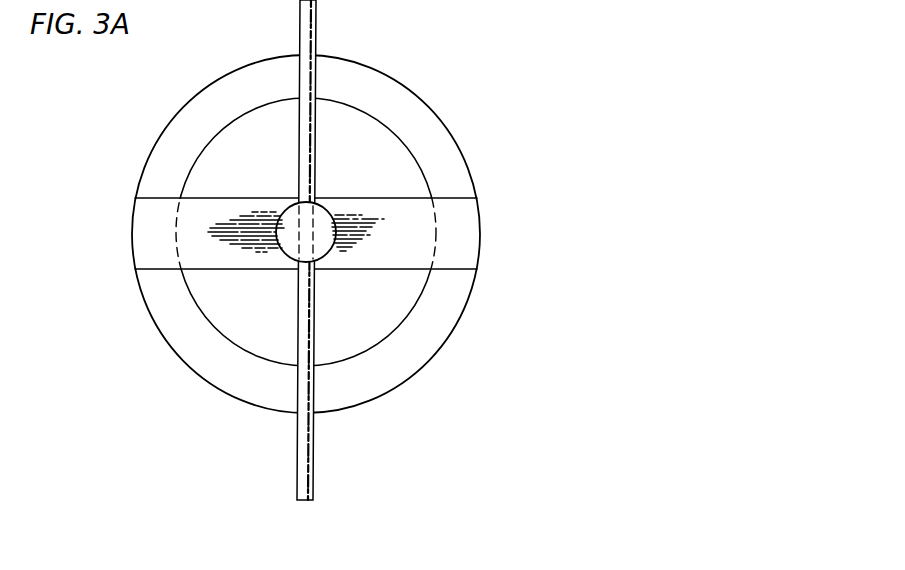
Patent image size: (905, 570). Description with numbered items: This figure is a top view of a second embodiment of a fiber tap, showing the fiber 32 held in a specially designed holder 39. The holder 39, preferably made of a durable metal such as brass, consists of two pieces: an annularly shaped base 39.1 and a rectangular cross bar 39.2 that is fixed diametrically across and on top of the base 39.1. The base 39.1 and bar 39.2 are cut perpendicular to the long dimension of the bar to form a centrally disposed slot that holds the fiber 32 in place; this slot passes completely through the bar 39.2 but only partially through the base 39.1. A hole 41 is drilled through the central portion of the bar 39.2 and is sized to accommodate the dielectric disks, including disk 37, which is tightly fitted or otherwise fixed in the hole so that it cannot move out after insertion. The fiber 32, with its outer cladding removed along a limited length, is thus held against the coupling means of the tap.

The holder 39 is at (365, 234).
The annularly shaped base 39.1 is at (433, 343).
The rectangular cross bar 39.2 is at (415, 201).
The dielectric disk 37 is at (296, 209).
The hole 41 is at (318, 209).
The fiber 32 is at (313, 484).